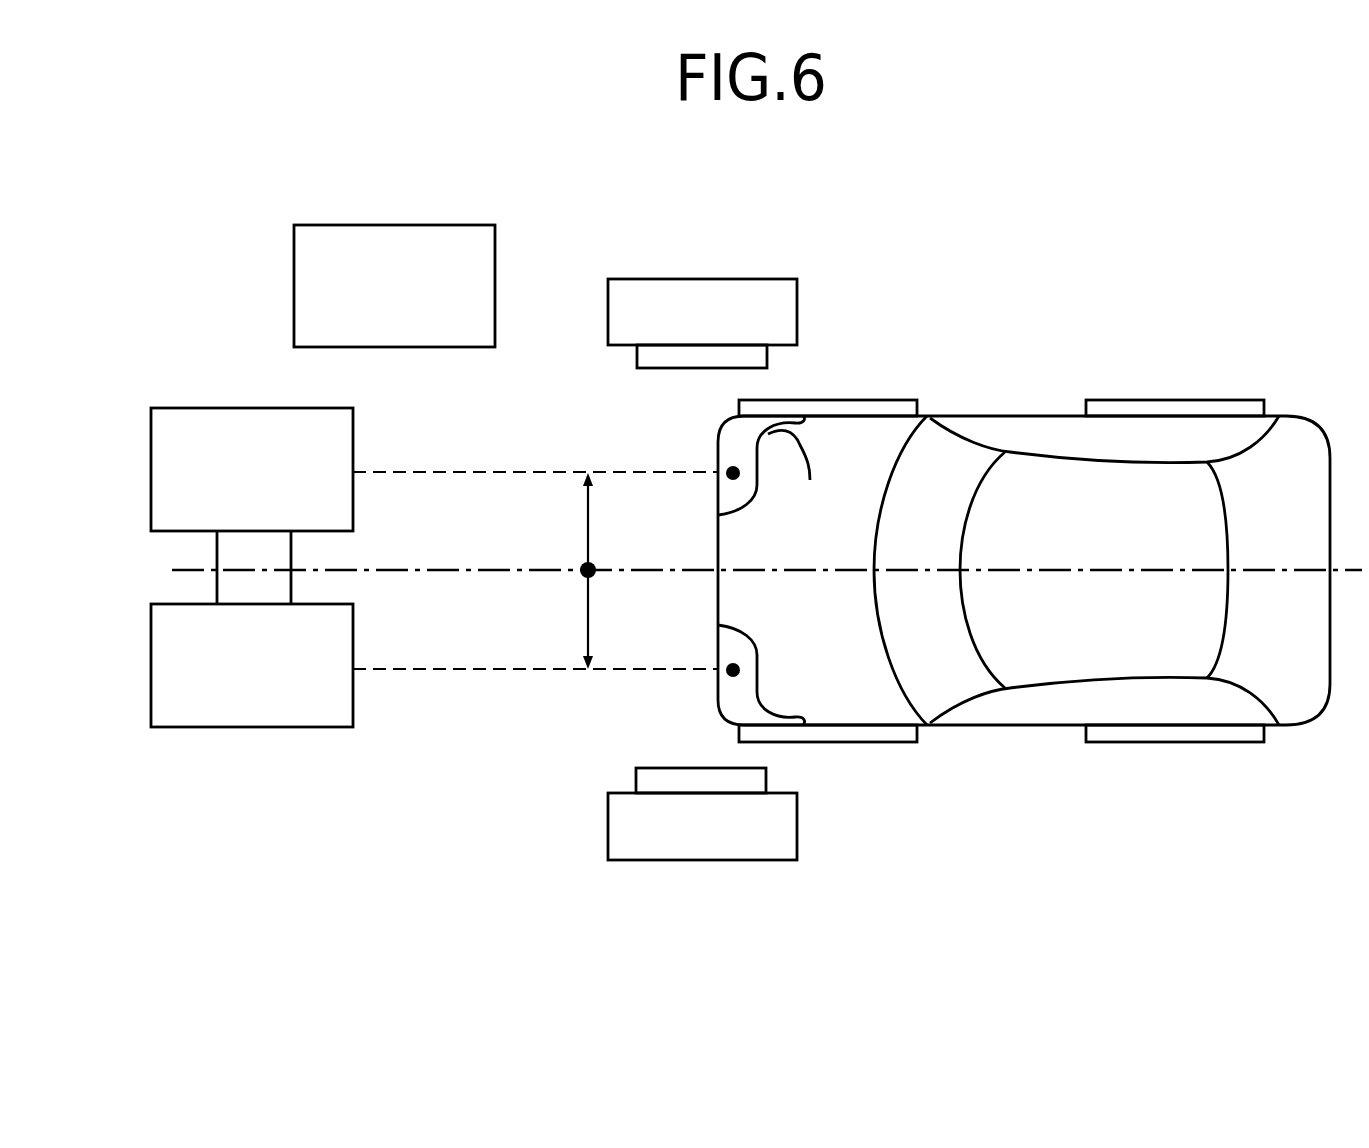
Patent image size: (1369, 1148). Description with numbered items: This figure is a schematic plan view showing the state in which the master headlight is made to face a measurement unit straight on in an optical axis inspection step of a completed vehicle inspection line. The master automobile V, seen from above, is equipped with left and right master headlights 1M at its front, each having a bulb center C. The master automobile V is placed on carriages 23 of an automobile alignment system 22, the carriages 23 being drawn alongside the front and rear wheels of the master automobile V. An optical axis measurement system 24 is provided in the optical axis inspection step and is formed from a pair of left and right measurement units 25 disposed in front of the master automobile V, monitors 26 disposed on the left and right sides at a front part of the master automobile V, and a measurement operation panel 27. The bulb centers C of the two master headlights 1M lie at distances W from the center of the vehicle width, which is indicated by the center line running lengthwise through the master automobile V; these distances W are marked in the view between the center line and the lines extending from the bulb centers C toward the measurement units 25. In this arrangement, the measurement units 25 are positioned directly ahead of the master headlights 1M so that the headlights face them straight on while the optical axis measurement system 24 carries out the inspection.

The automobile alignment system 22 is at (1173, 752).
The carriages 23 is at (867, 738).
The optical axis measurement system 24 is at (270, 293).
The measurement units 25 is at (207, 420).
The monitors 26 is at (719, 295).
The measurement operation panel 27 is at (437, 230).
The master headlights 1M is at (757, 692).
The bulb centers C is at (733, 473).
The distances between bulb centers and vehicle width center W is at (588, 530).
The master automobile V is at (1066, 594).